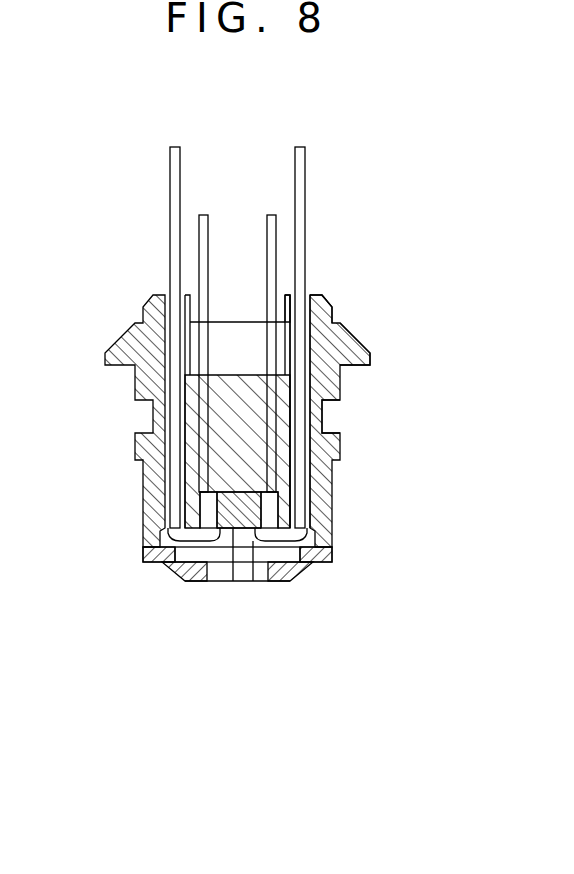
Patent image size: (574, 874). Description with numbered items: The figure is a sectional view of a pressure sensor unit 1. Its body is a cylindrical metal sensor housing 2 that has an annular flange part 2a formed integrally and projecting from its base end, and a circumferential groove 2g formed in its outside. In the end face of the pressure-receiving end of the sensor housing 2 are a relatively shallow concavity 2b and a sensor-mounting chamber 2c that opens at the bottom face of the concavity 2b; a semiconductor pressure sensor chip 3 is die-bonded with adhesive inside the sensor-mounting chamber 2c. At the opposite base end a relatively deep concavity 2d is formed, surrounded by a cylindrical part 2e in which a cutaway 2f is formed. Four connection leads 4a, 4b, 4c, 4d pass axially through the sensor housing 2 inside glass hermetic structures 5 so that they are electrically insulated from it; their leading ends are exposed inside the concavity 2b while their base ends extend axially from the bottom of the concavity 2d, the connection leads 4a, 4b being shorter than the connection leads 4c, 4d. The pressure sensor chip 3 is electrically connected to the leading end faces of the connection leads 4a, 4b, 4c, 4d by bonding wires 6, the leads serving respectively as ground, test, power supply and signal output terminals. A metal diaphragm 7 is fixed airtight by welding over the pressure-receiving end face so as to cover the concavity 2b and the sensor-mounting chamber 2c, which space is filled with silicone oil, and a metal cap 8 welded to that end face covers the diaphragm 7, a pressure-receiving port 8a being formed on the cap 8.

The pressure sensor unit 1 is at (252, 397).
The sensor housing 2 is at (143, 482).
The annular flange part 2a is at (372, 353).
The concavity 2b is at (292, 580).
The sensor-mounting chamber 2c is at (223, 583).
The concavity 2d is at (305, 298).
The cylindrical part 2e is at (328, 301).
The cutaway 2f is at (288, 296).
The circumferential groove 2g is at (341, 408).
The semiconductor pressure sensor chip 3 is at (241, 530).
The connection lead 4a is at (265, 215).
The connection lead 4b is at (208, 222).
The connection lead 4c is at (304, 150).
The connection lead 4d is at (170, 160).
The glass hermetic structure 5 is at (333, 478).
The bonding wire 6 is at (260, 548).
The metal diaphragm 7 is at (227, 528).
The metal cap 8 is at (162, 565).
The pressure-receiving port 8a is at (210, 583).